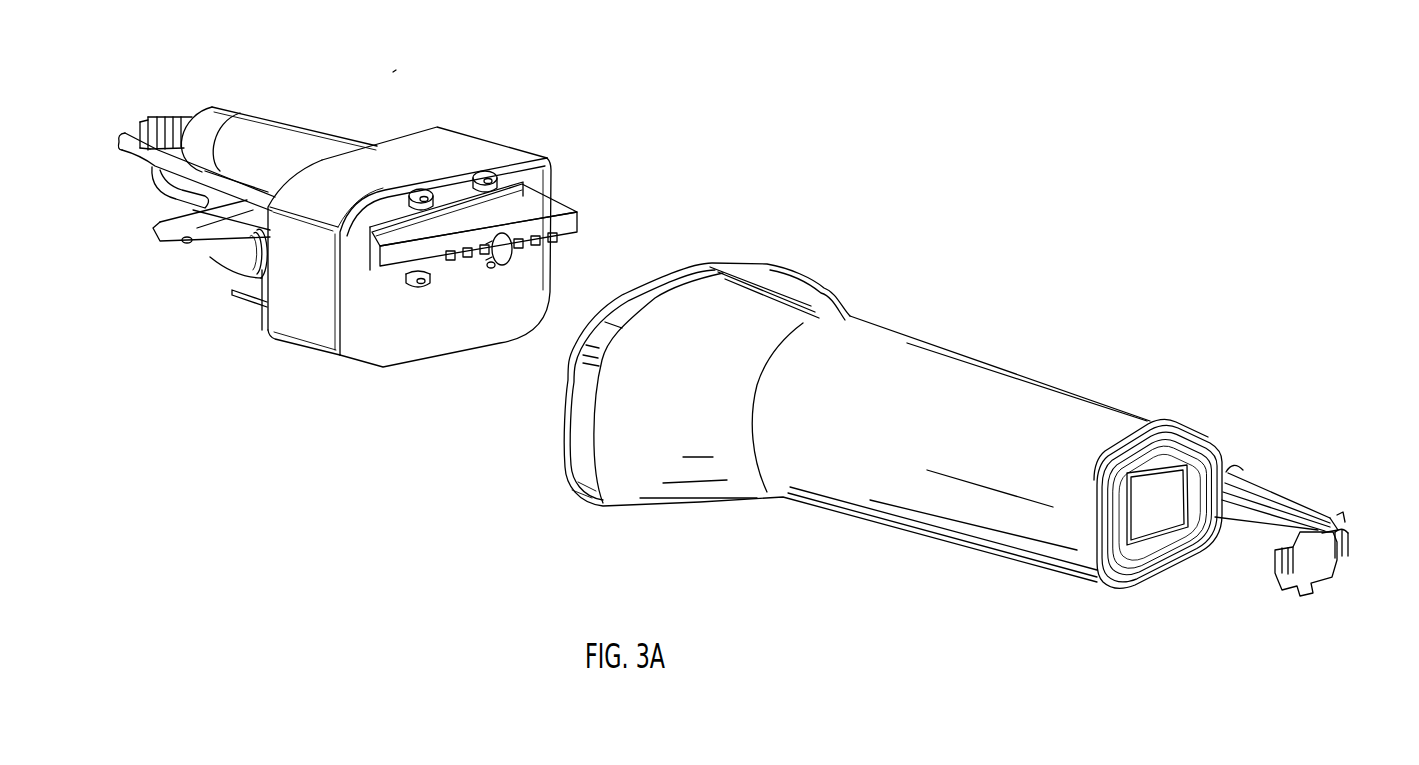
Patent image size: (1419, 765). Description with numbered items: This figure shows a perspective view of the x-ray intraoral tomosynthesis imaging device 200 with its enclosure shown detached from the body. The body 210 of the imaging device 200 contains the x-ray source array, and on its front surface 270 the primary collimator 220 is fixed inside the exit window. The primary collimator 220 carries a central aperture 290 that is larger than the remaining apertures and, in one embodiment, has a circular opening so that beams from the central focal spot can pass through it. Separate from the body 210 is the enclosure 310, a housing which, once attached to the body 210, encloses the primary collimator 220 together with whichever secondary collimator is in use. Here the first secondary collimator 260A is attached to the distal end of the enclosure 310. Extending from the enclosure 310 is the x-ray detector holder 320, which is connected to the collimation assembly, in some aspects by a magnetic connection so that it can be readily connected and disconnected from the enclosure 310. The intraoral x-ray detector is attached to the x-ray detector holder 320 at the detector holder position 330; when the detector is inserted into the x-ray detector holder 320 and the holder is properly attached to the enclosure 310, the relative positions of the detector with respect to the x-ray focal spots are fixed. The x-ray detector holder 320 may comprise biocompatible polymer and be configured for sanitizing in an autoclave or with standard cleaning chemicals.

The x-ray intraoral tomosynthesis imaging device 200 is at (393, 72).
The body 210 is at (291, 138).
The primary collimator 220 is at (560, 211).
The first secondary collimator 260A is at (1170, 433).
The front surface 270 is at (360, 360).
The central aperture 290 is at (506, 280).
The enclosure 310 is at (868, 333).
The x-ray detector holder 320 is at (1285, 499).
The detector holder position 330 is at (1318, 560).